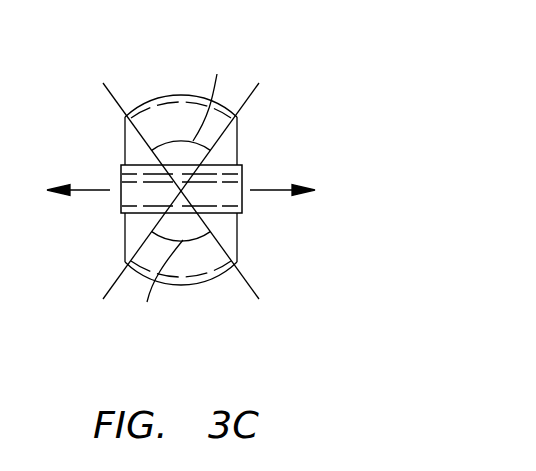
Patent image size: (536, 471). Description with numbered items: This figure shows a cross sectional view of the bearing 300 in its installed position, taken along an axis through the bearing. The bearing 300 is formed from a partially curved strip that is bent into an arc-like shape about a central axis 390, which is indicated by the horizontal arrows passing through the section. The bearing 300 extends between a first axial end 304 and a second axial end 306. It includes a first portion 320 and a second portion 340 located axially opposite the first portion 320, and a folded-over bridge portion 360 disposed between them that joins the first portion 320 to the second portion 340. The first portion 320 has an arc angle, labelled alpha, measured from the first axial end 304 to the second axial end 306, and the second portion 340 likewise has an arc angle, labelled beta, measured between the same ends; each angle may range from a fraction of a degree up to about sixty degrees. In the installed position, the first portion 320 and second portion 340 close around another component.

The bearing 300 is at (349, 68).
The first axial end 304 is at (126, 264).
The second axial end 306 is at (233, 265).
The first portion 320 is at (185, 95).
The second portion 340 is at (177, 287).
The folded-over bridge portion 360 is at (127, 217).
The central axis 390 is at (78, 188).